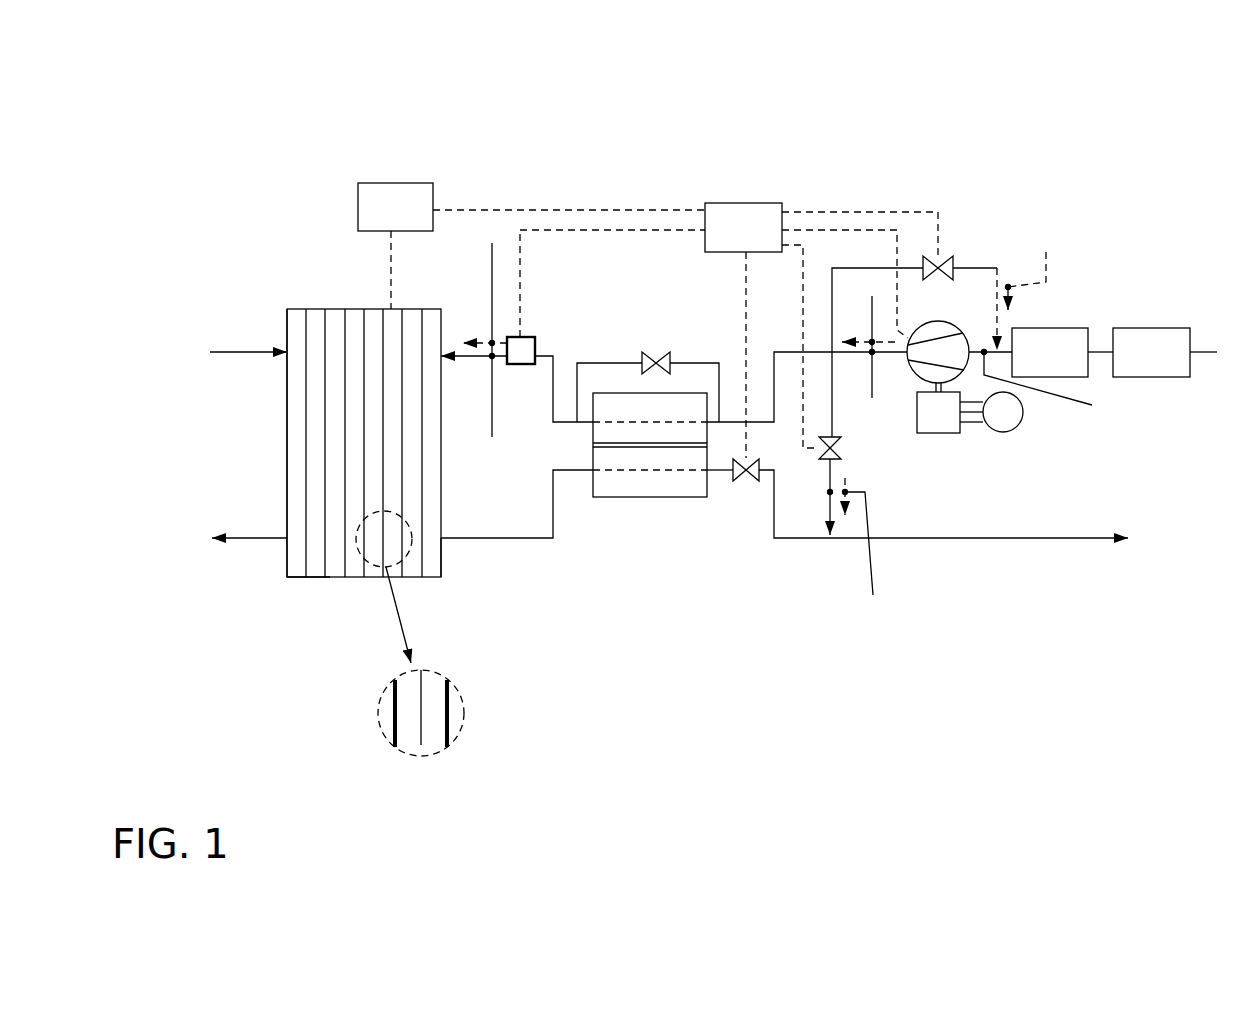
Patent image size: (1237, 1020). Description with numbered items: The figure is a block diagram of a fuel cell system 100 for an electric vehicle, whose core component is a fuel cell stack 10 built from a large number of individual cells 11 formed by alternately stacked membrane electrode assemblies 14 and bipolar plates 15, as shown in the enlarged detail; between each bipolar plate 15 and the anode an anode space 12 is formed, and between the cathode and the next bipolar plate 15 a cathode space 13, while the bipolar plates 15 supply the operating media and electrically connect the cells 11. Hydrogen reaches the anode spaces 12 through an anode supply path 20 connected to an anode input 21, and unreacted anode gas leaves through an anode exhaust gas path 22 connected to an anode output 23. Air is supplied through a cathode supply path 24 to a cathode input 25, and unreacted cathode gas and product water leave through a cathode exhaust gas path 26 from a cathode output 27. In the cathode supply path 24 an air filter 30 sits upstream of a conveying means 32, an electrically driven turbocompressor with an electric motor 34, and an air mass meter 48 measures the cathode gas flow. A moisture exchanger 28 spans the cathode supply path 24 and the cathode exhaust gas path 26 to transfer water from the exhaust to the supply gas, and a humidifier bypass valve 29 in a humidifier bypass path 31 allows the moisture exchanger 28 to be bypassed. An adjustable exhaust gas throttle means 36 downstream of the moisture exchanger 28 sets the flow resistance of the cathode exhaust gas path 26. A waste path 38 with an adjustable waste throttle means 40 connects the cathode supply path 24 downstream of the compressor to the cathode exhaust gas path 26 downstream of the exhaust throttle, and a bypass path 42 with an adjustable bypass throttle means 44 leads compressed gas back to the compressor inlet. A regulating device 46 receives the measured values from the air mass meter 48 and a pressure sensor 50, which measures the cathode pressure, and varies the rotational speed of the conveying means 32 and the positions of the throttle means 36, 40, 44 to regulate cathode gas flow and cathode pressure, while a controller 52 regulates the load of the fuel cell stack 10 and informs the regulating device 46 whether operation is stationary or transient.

The fuel cell system 100 is at (1078, 122).
The fuel cell stack 10 is at (323, 227).
The individual cell 11 is at (315, 330).
The anode space 12 is at (404, 733).
The cathode space 13 is at (437, 733).
The membrane electrode assembly 14 is at (421, 744).
The bipolar plate 15 is at (395, 723).
The anode supply path 20 is at (236, 352).
The anode input 21 is at (285, 338).
The anode exhaust gas path 22 is at (211, 575).
The anode output 23 is at (283, 545).
The cathode supply path 24 is at (545, 356).
The cathode input 25 is at (446, 350).
The cathode exhaust gas path 26 is at (533, 538).
The cathode output 27 is at (467, 594).
The moisture exchanger 28 is at (666, 487).
The humidifier bypass valve 29 is at (644, 355).
The air filter 30 is at (1173, 338).
The humidifier bypass path 31 is at (603, 363).
The conveying means 32 is at (937, 331).
The electric motor 34 is at (940, 415).
The exhaust gas throttle means 36 is at (740, 474).
The waste path 38 is at (862, 554).
The waste throttle means 40 is at (838, 458).
The bypass path 42 is at (983, 268).
The bypass throttle means 44 is at (950, 262).
The regulating device 46 is at (821, 325).
The air mass meter 48 is at (1072, 338).
The pressure sensor 50 is at (522, 357).
The controller 52 is at (531, 246).